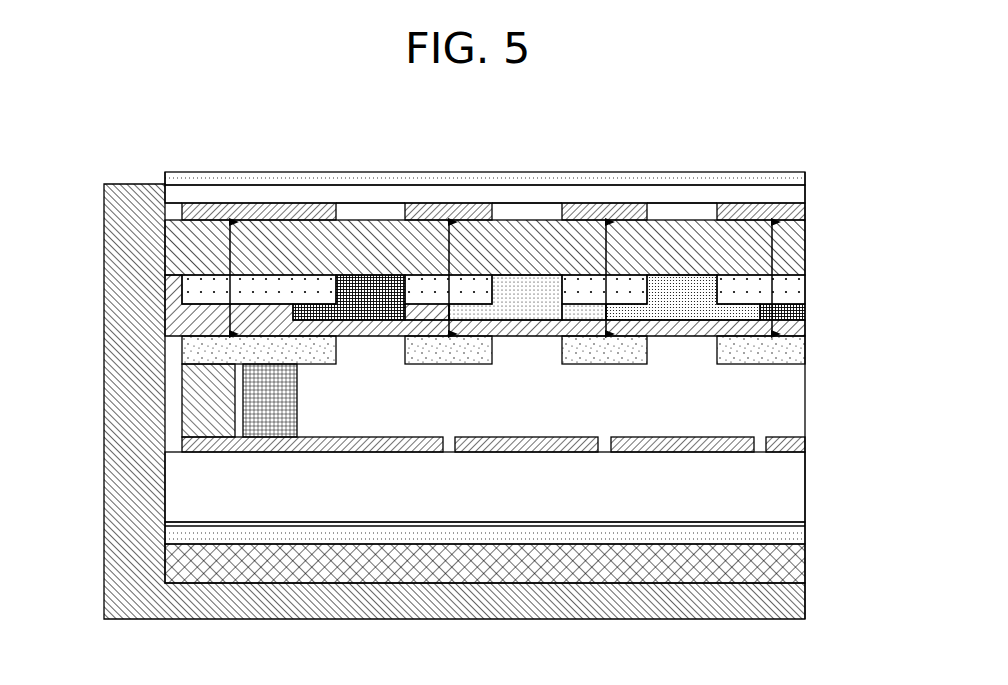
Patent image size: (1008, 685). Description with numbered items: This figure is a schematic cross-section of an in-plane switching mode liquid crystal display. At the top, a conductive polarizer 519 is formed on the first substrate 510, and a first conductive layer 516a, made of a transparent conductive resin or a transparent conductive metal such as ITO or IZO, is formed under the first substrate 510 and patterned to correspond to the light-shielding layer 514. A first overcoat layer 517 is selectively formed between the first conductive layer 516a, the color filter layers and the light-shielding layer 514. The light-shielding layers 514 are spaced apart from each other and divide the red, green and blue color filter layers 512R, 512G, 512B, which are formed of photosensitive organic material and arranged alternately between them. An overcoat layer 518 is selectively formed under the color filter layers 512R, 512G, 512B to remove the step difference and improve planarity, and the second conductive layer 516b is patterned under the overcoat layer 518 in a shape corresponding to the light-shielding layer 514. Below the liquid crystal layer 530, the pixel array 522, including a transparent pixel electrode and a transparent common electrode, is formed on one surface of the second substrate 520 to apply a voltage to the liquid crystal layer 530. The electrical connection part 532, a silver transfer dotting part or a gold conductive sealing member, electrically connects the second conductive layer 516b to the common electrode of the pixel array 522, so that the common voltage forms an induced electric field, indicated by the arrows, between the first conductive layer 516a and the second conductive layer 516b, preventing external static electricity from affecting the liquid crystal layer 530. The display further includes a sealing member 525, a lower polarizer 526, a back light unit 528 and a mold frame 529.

The conductive polarizer 519 is at (797, 178).
The first substrate 510 is at (793, 193).
The first conductive layer 516a is at (798, 212).
The first overcoat layer 517 is at (795, 248).
The light-shielding layer 514 is at (798, 288).
The overcoat layer 518 is at (795, 325).
The second conductive layer 516b is at (795, 357).
The red color filter layer 512R is at (368, 283).
The green color filter layer 512G is at (527, 283).
The blue color filter layer 512B is at (683, 283).
The electrical connection part 532 is at (187, 410).
The sealing member 525 is at (297, 402).
The liquid crystal layer 530 is at (493, 400).
The pixel array 522 is at (796, 443).
The second substrate 520 is at (795, 487).
The lower polarizer 526 is at (795, 535).
The back light unit 528 is at (795, 565).
The mold frame 529 is at (795, 600).